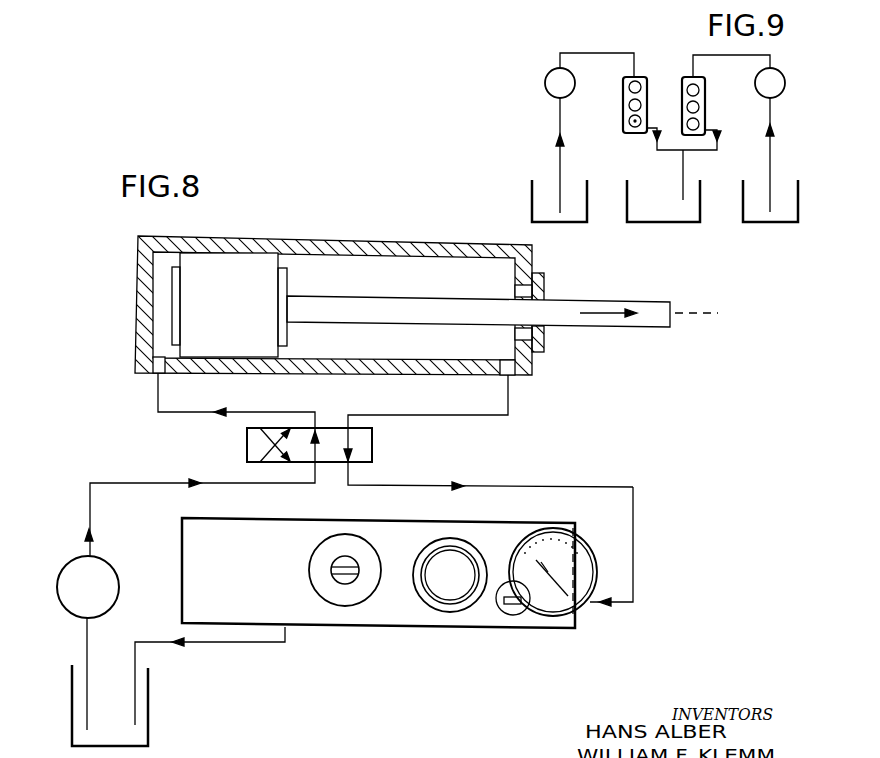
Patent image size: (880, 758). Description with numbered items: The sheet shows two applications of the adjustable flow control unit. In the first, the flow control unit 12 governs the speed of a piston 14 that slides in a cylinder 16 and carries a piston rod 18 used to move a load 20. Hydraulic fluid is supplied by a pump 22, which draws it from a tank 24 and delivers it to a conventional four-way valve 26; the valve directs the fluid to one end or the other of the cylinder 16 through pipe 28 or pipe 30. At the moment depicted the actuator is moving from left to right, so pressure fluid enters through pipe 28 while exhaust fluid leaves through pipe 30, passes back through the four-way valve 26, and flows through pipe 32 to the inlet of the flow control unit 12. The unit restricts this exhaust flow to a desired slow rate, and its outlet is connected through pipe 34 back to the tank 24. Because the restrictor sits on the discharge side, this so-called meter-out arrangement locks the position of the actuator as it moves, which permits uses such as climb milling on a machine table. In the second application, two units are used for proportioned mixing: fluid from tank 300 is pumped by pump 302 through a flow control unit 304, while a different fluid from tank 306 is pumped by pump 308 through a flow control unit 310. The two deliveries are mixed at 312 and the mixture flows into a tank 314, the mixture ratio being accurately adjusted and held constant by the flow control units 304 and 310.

In FIG. 8, the adjustable flow control unit 12 is at (445, 633).
In FIG. 8, the piston 14 is at (243, 262).
In FIG. 8, the cylinder 16 is at (407, 241).
In FIG. 8, the piston rod 18 is at (608, 328).
In FIG. 8, the load 20 is at (711, 314).
In FIG. 8, the pump 22 is at (57, 575).
In FIG. 8, the tank 24 is at (149, 736).
In FIG. 8, the four-way valve 26 is at (247, 447).
In FIG. 8, the pipe 28 is at (156, 389).
In FIG. 8, the pipe 30 is at (509, 398).
In FIG. 8, the pipe 32 is at (634, 560).
In FIG. 8, the pipe 34 is at (240, 643).
In FIG. 9, the tank 300 is at (531, 192).
In FIG. 9, the pump 302 is at (548, 96).
In FIG. 9, the flow control unit 304 is at (623, 107).
In FIG. 9, the tank 306 is at (774, 224).
In FIG. 9, the pump 308 is at (781, 93).
In FIG. 9, the flow control unit 310 is at (706, 108).
In FIG. 9, the mixing point 312 is at (684, 173).
In FIG. 9, the tank 314 is at (680, 224).